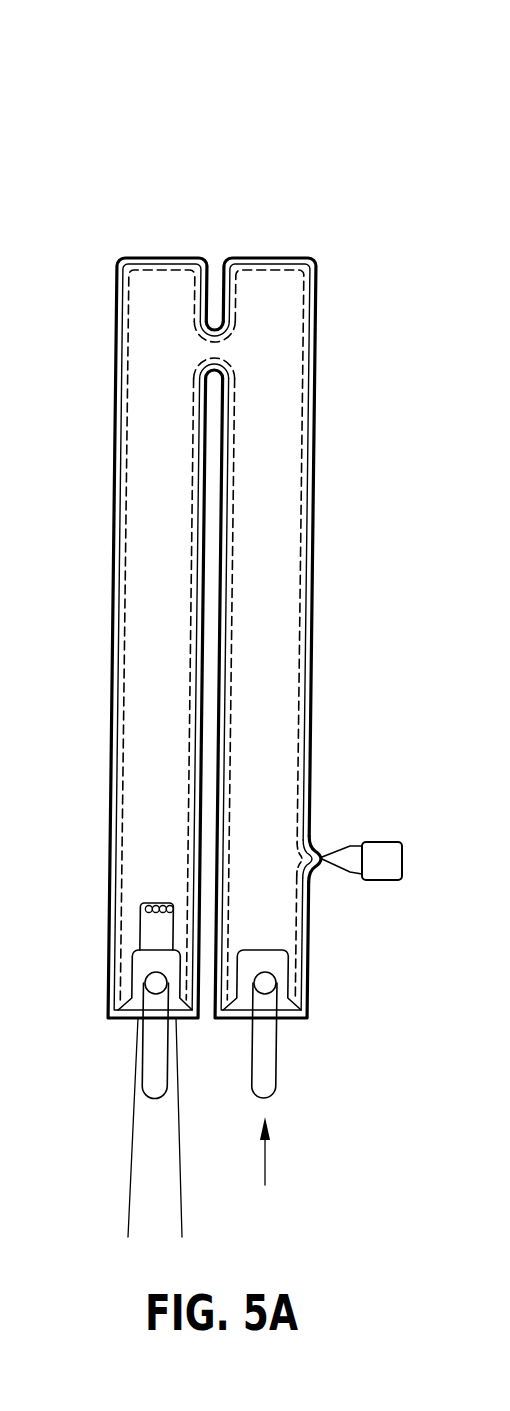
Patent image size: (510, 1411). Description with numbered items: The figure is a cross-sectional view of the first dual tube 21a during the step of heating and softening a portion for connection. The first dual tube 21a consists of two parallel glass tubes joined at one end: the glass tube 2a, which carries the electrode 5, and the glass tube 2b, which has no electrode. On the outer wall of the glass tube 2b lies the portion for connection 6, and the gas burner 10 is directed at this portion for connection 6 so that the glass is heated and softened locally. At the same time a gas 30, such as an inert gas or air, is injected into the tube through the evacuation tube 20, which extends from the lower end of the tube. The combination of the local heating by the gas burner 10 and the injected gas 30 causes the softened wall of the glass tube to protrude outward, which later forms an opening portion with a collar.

The first dual tube 21a is at (235, 606).
The glass tube 2a is at (160, 296).
The glass tube 2b is at (270, 292).
The electrode 5 is at (150, 903).
The portion for connection 6 is at (315, 878).
The gas burner 10 is at (380, 850).
The evacuation tube 20 is at (150, 1082).
The gas 30 is at (268, 1170).